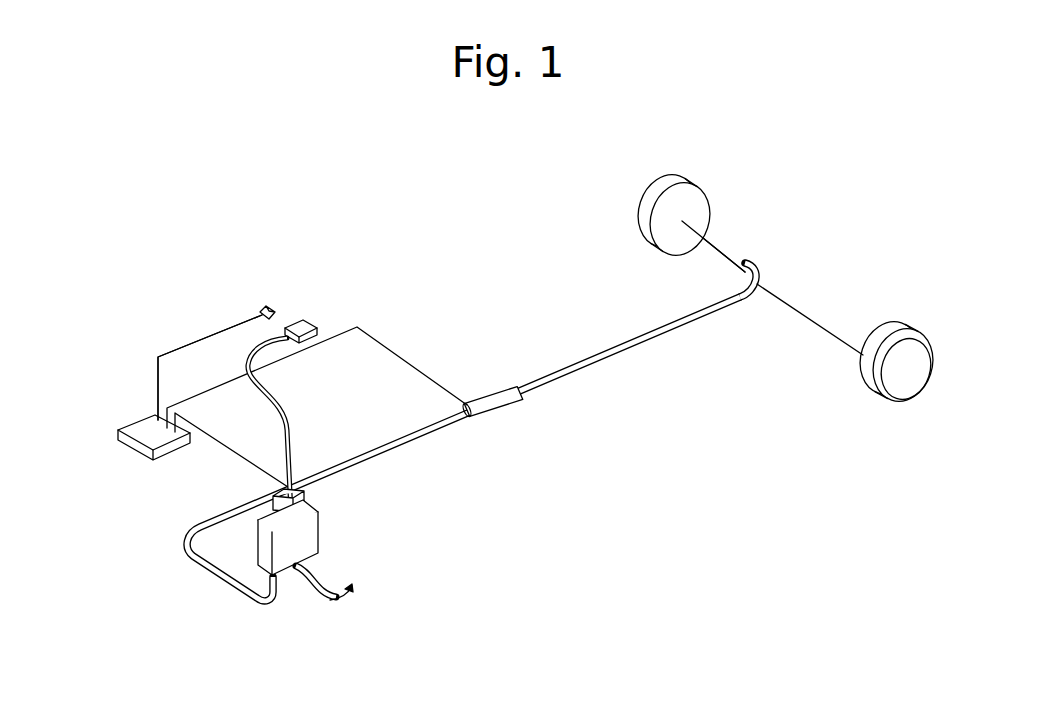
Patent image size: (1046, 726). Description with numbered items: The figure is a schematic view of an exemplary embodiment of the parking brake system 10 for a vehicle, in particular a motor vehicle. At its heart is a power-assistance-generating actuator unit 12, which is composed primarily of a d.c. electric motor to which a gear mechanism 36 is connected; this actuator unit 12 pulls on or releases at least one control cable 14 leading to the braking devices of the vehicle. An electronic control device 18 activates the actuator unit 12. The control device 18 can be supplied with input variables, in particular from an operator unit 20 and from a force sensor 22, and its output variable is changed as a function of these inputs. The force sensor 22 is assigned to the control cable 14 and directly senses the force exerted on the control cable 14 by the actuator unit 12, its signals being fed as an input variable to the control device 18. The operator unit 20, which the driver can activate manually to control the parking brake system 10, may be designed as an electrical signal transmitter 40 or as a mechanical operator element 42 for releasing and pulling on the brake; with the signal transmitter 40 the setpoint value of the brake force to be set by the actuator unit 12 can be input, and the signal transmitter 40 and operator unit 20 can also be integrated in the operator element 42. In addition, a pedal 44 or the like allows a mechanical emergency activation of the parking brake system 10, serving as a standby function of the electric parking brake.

The parking brake system 10 is at (148, 618).
The actuator unit 12 is at (288, 577).
The control cable 14 is at (803, 313).
The electronic control device 18 is at (133, 458).
The operator unit 20 is at (272, 306).
The force sensor 22 is at (498, 415).
The gear mechanism 36 is at (322, 535).
The electrical signal transmitter 40 is at (263, 306).
The mechanical operator element 42 is at (312, 327).
The pedal 44 is at (343, 600).